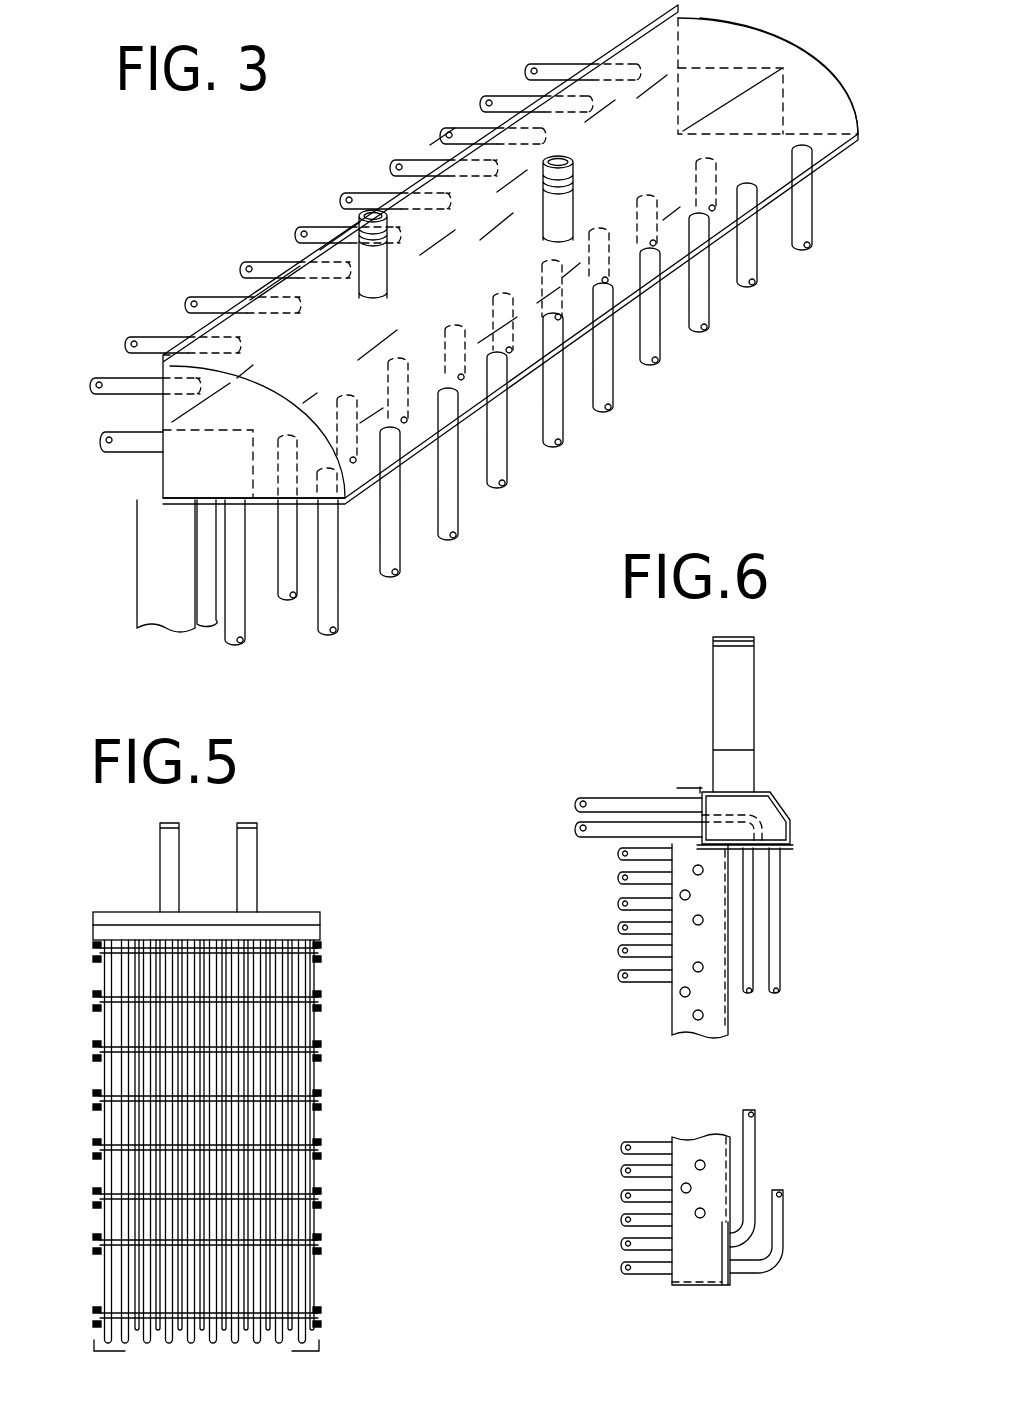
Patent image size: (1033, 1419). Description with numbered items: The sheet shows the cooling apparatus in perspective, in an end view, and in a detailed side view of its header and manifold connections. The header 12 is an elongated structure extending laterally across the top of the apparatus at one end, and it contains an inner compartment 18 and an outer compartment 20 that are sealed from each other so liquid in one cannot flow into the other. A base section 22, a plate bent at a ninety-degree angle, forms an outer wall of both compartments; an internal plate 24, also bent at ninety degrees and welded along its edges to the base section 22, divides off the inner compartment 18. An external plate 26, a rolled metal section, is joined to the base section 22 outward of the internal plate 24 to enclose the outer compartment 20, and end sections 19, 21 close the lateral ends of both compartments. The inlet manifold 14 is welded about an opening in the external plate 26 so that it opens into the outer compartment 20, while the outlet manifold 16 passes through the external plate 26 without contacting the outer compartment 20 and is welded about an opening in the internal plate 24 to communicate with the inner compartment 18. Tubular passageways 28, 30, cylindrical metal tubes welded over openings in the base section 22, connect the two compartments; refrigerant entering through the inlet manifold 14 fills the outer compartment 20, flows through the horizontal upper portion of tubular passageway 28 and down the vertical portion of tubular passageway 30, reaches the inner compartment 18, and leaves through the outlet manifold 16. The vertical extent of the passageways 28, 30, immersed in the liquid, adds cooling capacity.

In FIG. 3, the header 12 is at (596, 43).
In FIG. 5, the header 12 is at (290, 912).
In FIG. 6, the header 12 is at (790, 826).
In FIG. 3, the inlet manifold 14 is at (580, 185).
In FIG. 5, the inlet manifold 14 is at (180, 866).
In FIG. 6, the inlet manifold 14 is at (755, 719).
In FIG. 3, the outlet manifold 16 is at (356, 255).
In FIG. 5, the outlet manifold 16 is at (258, 866).
In FIG. 3, the inner compartment 18 is at (208, 486).
In FIG. 3, the end section 19 is at (349, 494).
In FIG. 3, the outer compartment 20 is at (795, 100).
In FIG. 3, the end section 21 is at (817, 121).
In FIG. 3, the base section 22 is at (160, 478).
In FIG. 5, the base section 22 is at (207, 1146).
In FIG. 6, the base section 22 is at (701, 1064).
In FIG. 3, the internal plate 24 is at (313, 389).
In FIG. 3, the external plate 26 is at (273, 431).
In FIG. 3, the tubular passageway 28 is at (122, 408).
In FIG. 5, the tubular passageway 28 is at (205, 1141).
In FIG. 6, the tubular passageway 28 is at (748, 962).
In FIG. 3, the tubular passageway 30 is at (130, 465).
In FIG. 5, the tubular passageway 30 is at (224, 1135).
In FIG. 6, the tubular passageway 30 is at (782, 910).